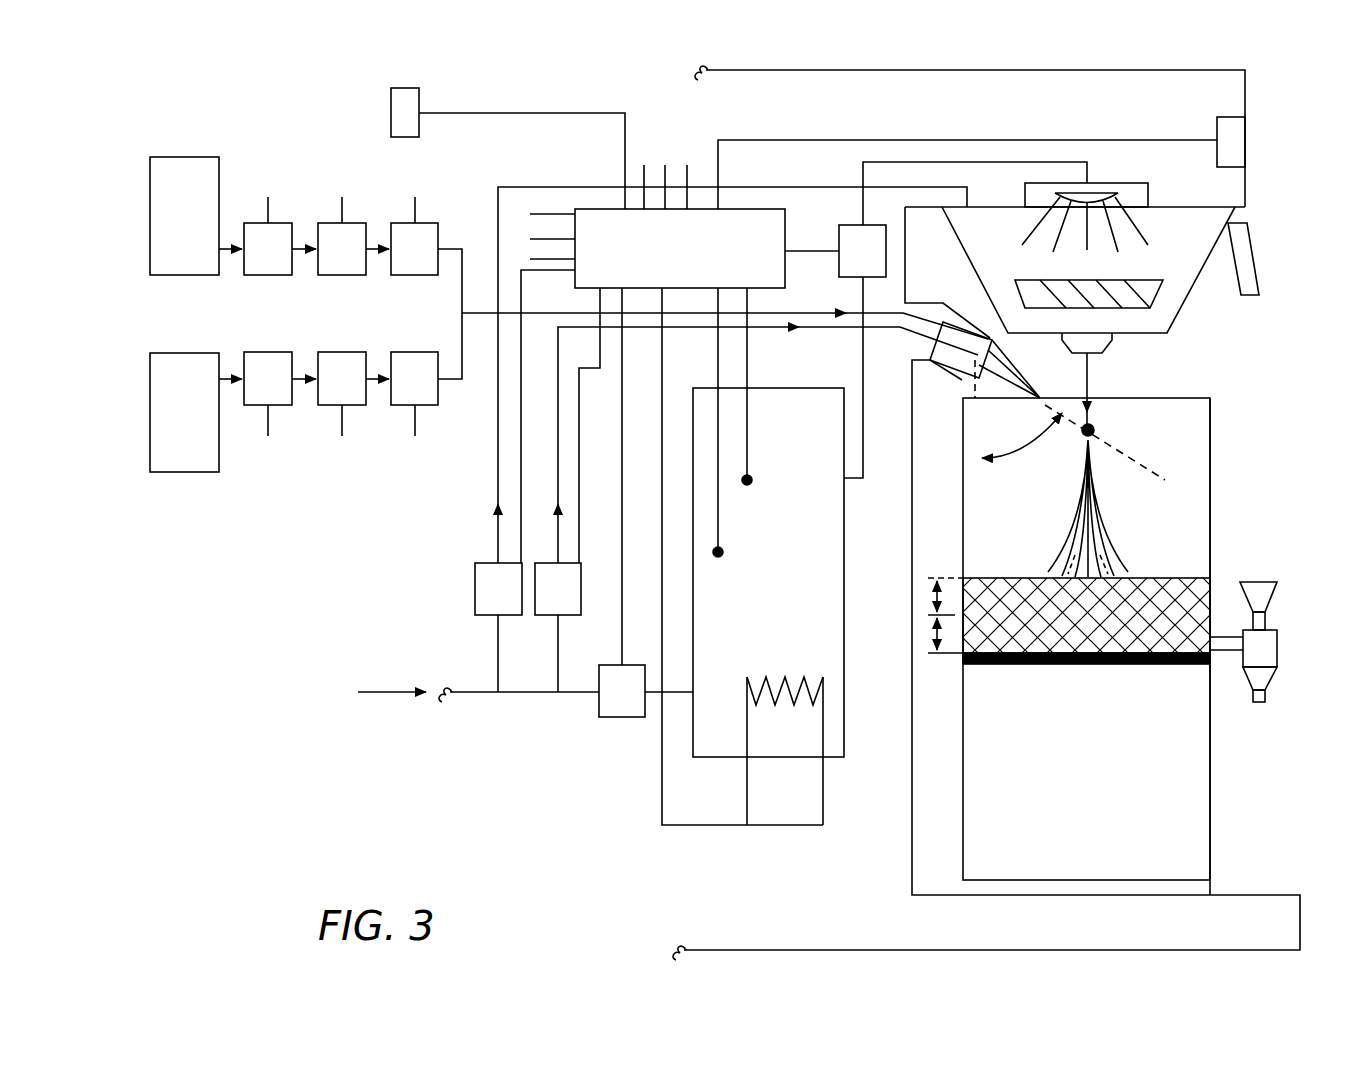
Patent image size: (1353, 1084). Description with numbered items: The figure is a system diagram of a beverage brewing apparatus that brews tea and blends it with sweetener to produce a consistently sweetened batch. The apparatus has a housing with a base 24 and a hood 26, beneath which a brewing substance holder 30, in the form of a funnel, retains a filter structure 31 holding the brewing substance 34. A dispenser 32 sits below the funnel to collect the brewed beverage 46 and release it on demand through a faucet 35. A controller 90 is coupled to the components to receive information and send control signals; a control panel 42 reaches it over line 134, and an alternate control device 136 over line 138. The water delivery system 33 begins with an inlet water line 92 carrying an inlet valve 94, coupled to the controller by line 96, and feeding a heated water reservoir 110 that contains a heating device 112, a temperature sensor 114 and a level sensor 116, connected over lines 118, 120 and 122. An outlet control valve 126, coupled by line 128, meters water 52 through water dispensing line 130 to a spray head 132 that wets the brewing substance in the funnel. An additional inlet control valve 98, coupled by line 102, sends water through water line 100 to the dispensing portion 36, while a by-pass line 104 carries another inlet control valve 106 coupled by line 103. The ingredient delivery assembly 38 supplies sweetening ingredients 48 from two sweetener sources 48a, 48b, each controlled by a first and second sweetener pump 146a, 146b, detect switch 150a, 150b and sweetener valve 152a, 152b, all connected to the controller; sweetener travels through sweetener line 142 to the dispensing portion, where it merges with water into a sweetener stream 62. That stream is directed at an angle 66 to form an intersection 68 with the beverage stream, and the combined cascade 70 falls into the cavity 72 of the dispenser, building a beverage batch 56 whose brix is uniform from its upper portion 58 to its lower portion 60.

The base 24 is at (1268, 921).
The hood 26 is at (1066, 90).
The beverage brewing substance holder 30 is at (1202, 298).
The filter structure 31 is at (1170, 274).
The dispenser 32 is at (1212, 546).
The water delivery system 33 is at (366, 587).
The brewing substance 34 is at (1138, 301).
The faucet 35 is at (1278, 651).
The dispensing portion 36 is at (966, 320).
The ingredient delivery assembly 38 is at (122, 130).
The control panel 42 is at (1237, 148).
The brewed beverage 46 is at (1092, 374).
The sweetening ingredients 48 is at (116, 364).
The first sweetener source 48a is at (178, 275).
The second sweetener source 48b is at (178, 353).
The water 52 is at (386, 690).
The beverage batch 56 is at (1086, 615).
The upper portion 58 is at (937, 578).
The lower portion 60 is at (937, 654).
The sweetener stream 62 is at (1060, 398).
The angle 66 is at (1026, 448).
The intersection 68 is at (1096, 431).
The combined cascade 70 is at (1092, 531).
The cavity 72 is at (1172, 417).
The controller 90 is at (650, 217).
The inlet water line 92 is at (521, 696).
The inlet valve 94 is at (625, 712).
The line 96 is at (622, 563).
The inlet control valve 98 is at (582, 590).
The water line 100 is at (556, 452).
The line 102 is at (580, 507).
The line 103 is at (531, 273).
The by-pass line 104 is at (497, 194).
The inlet control valve 106 is at (475, 584).
The heated water reservoir 110 is at (846, 633).
The heating device 112 is at (824, 796).
The temperature sensor 114 is at (723, 557).
The level sensor 116 is at (751, 484).
The line 118 is at (662, 804).
The line 120 is at (721, 514).
The line 122 is at (749, 444).
The outlet control valve 126 is at (838, 266).
The line 128 is at (822, 249).
The water dispensing line 130 is at (957, 161).
The spray head 132 is at (1132, 142).
The line 134 is at (1186, 140).
The control device 136 is at (391, 111).
The line 138 is at (462, 112).
The sweetener line 142 is at (487, 314).
The first sweetener pump 146a is at (258, 222).
The second sweetener pump 146b is at (281, 405).
The first detect switch 150a is at (331, 222).
The second detect switch 150b is at (354, 405).
The first sweetener valve 152a is at (404, 222).
The second sweetener valve 152b is at (428, 405).